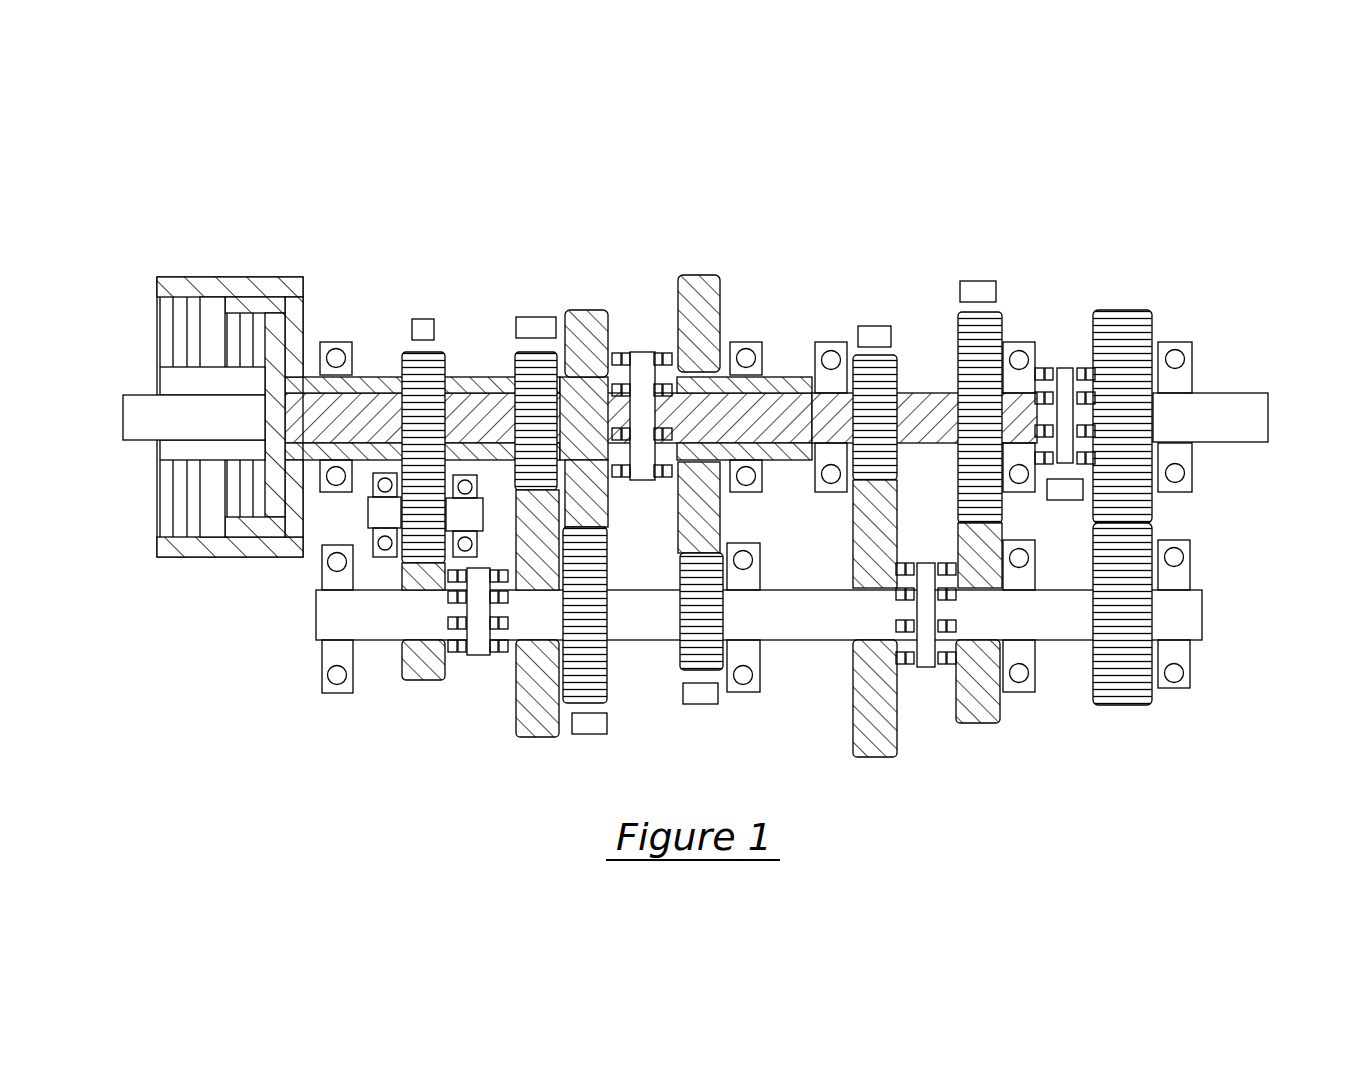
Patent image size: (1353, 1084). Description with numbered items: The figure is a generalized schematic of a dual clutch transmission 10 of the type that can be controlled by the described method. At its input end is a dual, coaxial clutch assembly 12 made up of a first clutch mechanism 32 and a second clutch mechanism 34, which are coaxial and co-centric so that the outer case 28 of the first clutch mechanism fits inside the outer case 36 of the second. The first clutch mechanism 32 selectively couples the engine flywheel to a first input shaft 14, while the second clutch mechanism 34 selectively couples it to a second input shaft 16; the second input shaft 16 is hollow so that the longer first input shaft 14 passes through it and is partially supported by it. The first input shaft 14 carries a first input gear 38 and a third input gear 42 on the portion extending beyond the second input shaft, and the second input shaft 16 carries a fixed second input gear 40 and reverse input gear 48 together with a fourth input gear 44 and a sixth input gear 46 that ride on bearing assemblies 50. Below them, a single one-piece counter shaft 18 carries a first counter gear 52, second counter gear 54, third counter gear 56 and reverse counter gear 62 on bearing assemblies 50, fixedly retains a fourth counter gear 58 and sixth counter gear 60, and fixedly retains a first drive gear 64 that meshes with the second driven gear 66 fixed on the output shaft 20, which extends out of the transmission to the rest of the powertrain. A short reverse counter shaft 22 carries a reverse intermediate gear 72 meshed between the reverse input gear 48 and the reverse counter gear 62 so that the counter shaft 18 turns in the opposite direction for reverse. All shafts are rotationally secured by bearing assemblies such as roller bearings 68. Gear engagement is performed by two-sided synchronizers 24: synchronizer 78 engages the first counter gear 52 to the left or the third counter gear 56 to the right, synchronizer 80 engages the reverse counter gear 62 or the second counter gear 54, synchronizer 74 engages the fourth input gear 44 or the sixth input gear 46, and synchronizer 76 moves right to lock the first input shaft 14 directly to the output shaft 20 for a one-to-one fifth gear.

The dual clutch transmission 10 is at (508, 256).
The dual coaxial clutch assembly 12 is at (264, 367).
The first input shaft 14 is at (934, 393).
The second input shaft 16 is at (362, 385).
The counter shaft 18 is at (322, 612).
The output shaft 20 is at (1262, 410).
The reverse counter shaft 22 is at (322, 543).
The synchronizers 24 is at (664, 320).
The outer case of first clutch mechanism 28 is at (280, 330).
The first clutch mechanism 32 is at (258, 312).
The second clutch mechanism 34 is at (200, 300).
The outer case of second clutch mechanism 36 is at (305, 298).
The first input gear 38 is at (892, 393).
The second input gear 40 is at (509, 360).
The third input gear 42 is at (990, 325).
The fourth input gear 44 is at (598, 312).
The sixth input gear 46 is at (720, 292).
The reverse input gear 48 is at (447, 352).
The bearing assemblies 50 is at (601, 468).
The first counter gear 52 is at (855, 693).
The second counter gear 54 is at (557, 733).
The third counter gear 56 is at (967, 717).
The fourth counter gear 58 is at (607, 685).
The sixth counter gear 60 is at (678, 657).
The reverse counter gear 62 is at (397, 672).
The first drive gear 64 is at (1103, 682).
The second driven gear 66 is at (1140, 325).
The bearing assembly 68 is at (763, 344).
The reverse intermediate gear 72 is at (372, 511).
The synchronizer 74 is at (641, 356).
The synchronizer 76 is at (1065, 372).
The synchronizer 78 is at (925, 655).
The synchronizer 80 is at (473, 655).